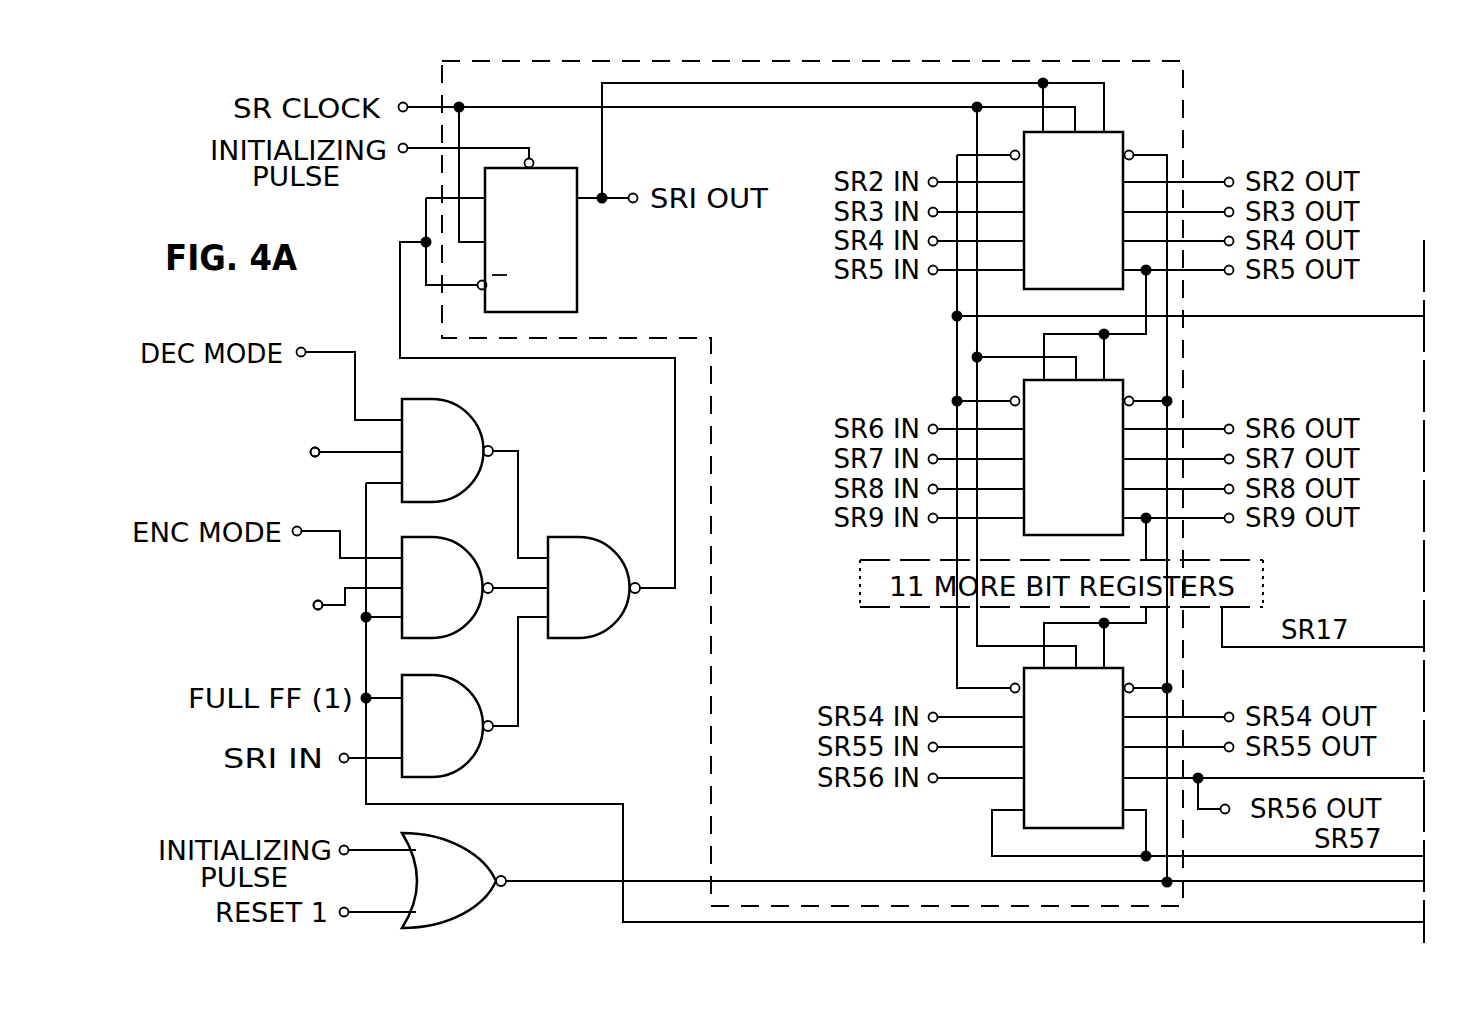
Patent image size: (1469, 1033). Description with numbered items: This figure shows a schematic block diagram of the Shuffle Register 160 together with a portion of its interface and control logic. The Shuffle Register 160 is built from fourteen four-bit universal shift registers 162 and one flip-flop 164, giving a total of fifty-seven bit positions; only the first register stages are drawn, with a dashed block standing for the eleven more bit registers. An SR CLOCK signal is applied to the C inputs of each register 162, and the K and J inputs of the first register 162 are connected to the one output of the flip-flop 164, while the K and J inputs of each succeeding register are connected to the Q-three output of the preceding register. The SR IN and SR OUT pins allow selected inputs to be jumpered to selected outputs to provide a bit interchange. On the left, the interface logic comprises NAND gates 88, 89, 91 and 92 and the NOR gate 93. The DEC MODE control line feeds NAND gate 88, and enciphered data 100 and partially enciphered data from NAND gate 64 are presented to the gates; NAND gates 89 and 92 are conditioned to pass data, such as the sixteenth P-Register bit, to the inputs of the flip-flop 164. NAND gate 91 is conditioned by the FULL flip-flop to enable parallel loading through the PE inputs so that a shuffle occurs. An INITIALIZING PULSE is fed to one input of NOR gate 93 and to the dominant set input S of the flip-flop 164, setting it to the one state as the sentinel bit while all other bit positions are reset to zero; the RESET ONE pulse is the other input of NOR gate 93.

The Shuffle Register 160 is at (981, 56).
The four-bit universal shift register 162 is at (1022, 140).
The flip-flop 164 is at (565, 240).
The NAND gate 88 is at (462, 427).
The NAND gate 89 is at (440, 558).
The NAND gate 91 is at (463, 738).
The NAND gate 92 is at (588, 623).
The NOR gate 93 is at (472, 868).
The enciphered data 100 is at (228, 466).
The NAND gate 64 is at (207, 606).